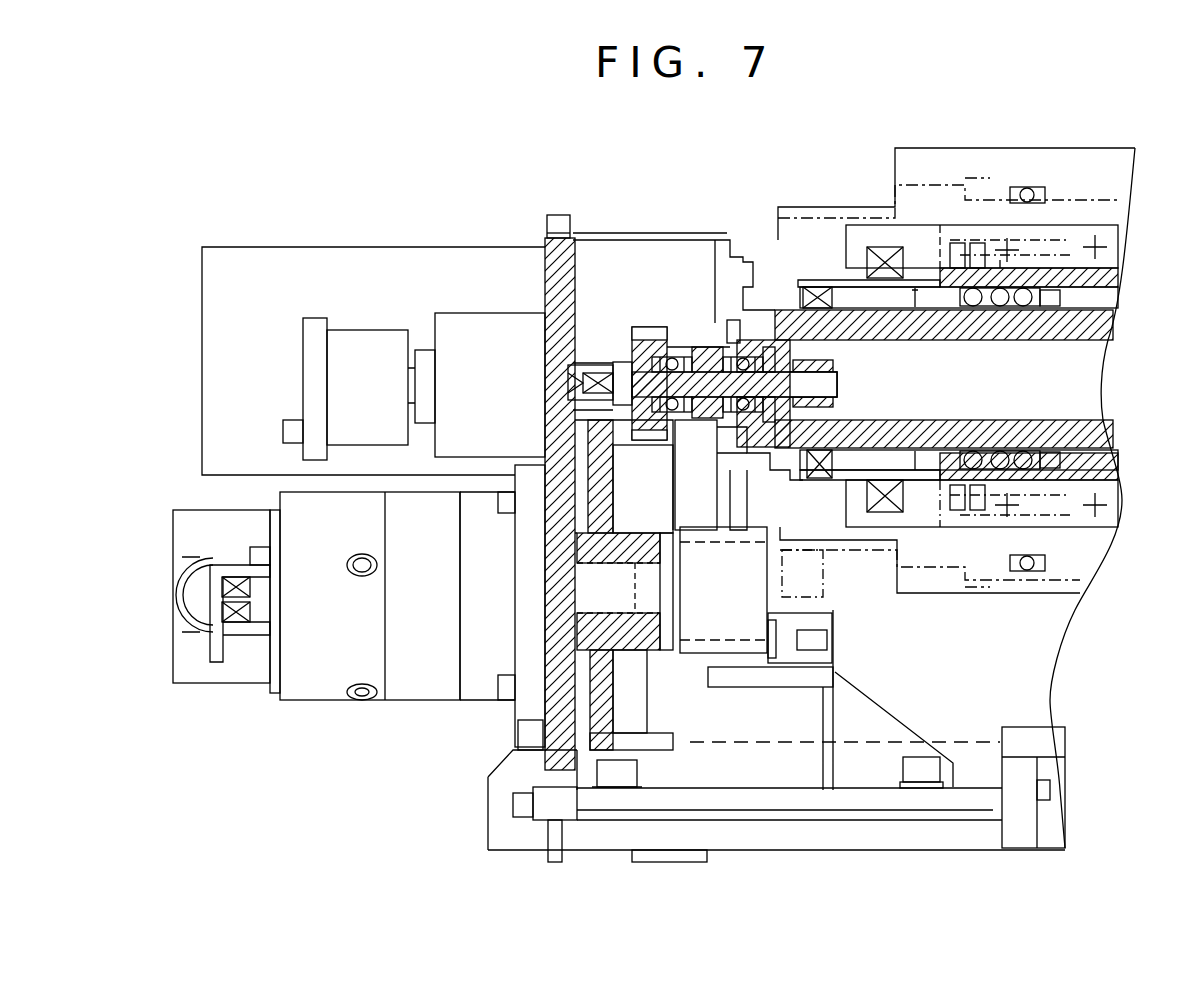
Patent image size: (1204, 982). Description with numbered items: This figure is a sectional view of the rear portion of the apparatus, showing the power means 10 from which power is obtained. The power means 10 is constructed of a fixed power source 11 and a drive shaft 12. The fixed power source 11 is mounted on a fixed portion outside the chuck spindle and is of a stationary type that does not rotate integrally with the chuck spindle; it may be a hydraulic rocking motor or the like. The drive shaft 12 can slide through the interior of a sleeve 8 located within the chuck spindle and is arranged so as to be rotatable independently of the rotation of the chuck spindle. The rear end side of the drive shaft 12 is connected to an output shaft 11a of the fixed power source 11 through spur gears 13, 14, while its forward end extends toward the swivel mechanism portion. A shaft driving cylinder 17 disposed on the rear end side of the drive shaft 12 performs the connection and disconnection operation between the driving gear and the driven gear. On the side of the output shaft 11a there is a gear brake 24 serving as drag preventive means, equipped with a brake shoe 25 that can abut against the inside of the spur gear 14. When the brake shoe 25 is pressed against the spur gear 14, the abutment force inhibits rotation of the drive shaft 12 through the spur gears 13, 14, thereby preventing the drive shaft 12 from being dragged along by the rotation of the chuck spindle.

The sleeve 8 is at (1115, 283).
The power means 10 is at (392, 833).
The fixed power source 11 is at (295, 690).
The output shaft 11a is at (625, 591).
The drive shaft 12 is at (1110, 320).
The spur gear 13 is at (636, 330).
The spur gear 14 is at (563, 687).
The shaft driving cylinder 17 is at (475, 327).
The gear brake 24 is at (695, 670).
The brake shoe 25 is at (643, 653).